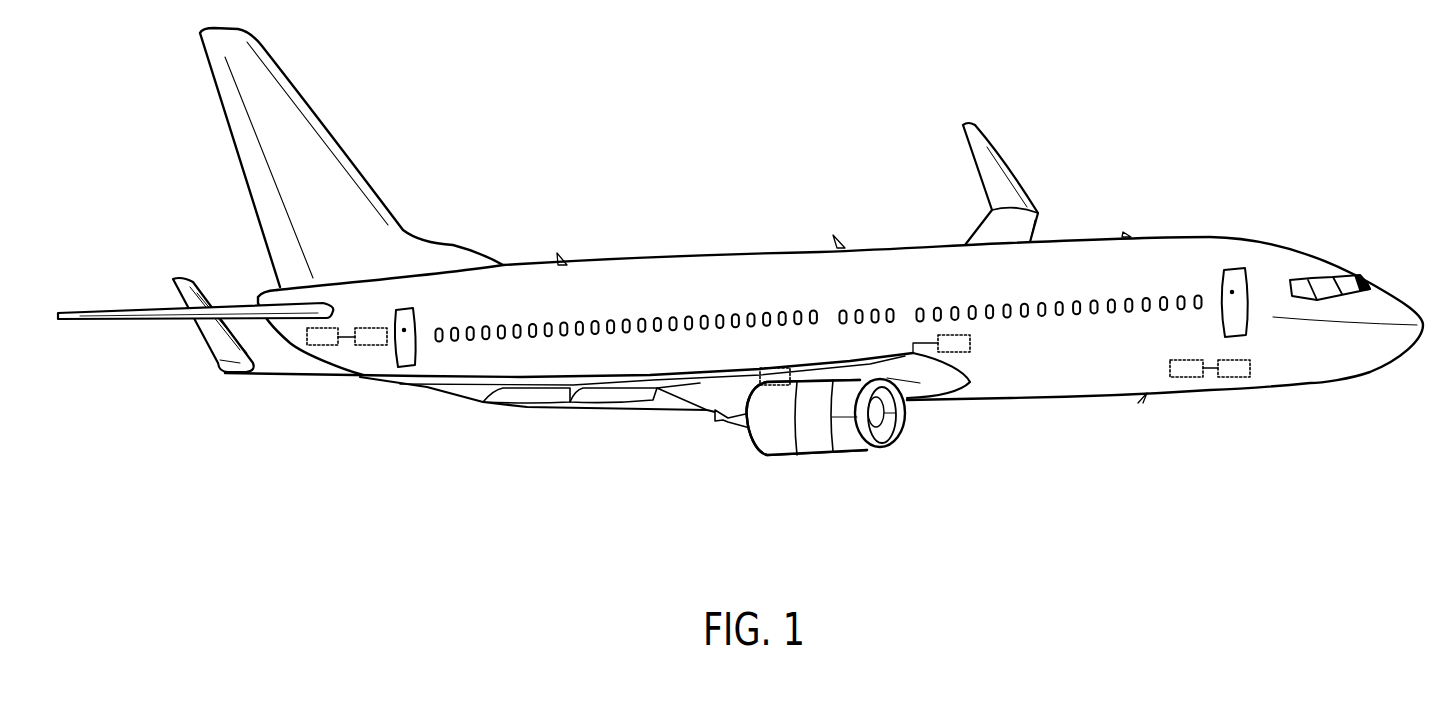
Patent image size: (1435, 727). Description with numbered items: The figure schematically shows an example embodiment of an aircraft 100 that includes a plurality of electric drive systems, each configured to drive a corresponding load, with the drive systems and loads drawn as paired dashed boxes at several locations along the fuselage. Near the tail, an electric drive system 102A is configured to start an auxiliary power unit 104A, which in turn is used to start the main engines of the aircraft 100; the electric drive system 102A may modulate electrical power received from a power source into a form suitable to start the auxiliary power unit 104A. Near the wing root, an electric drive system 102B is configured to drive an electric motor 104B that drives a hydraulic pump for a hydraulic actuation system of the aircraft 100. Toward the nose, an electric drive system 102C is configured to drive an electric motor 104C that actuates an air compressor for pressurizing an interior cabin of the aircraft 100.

The aircraft 100 is at (1258, 202).
The electric drive system 102A is at (378, 327).
The electric drive system 102B is at (972, 352).
The electric drive system 102C is at (1230, 378).
The auxiliary power unit 104A is at (333, 327).
The electric motor 104B is at (775, 368).
The electric motor 104C is at (1190, 378).